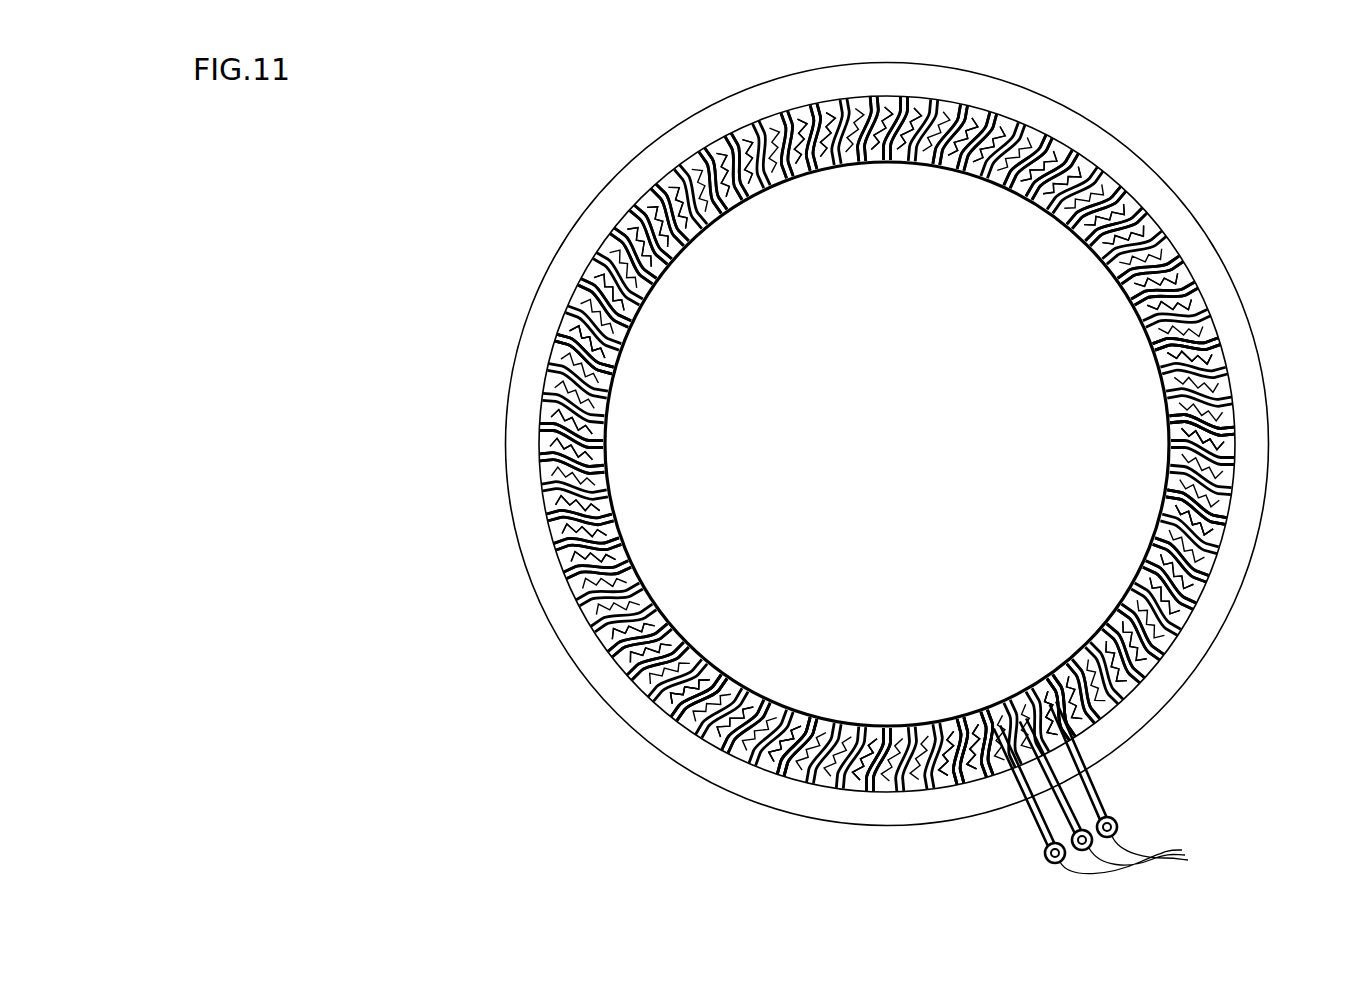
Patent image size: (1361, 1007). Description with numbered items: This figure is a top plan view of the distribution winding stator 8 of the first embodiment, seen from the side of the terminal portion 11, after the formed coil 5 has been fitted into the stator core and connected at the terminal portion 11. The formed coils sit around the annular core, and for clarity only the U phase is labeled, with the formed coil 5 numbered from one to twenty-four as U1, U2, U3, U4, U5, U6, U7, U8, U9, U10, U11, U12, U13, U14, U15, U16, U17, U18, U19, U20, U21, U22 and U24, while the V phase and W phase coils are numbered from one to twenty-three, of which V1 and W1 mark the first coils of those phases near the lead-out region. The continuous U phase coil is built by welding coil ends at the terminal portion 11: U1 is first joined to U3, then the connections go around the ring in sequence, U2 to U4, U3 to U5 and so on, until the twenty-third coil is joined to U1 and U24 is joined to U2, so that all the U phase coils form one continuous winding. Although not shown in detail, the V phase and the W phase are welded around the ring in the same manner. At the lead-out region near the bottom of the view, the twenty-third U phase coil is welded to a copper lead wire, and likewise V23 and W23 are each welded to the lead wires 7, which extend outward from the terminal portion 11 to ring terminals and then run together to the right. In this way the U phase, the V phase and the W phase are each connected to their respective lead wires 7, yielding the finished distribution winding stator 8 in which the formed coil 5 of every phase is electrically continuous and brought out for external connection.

The U phase formed coil number one U1 is at (865, 797).
The U phase formed coil number two U2 is at (795, 770).
The U phase formed coil number three U3 is at (723, 750).
The U phase formed coil number four U4 is at (660, 713).
The U phase formed coil number five U5 is at (607, 643).
The U phase formed coil number six U6 is at (557, 540).
The U phase formed coil number seven U7 is at (545, 442).
The U phase formed coil number eight U8 is at (553, 350).
The U phase formed coil number nine U9 is at (580, 272).
The U phase formed coil number ten U10 is at (640, 200).
The U phase formed coil number eleven U11 is at (710, 140).
The U phase formed coil number twelve U12 is at (787, 112).
The U phase formed coil number thirteen U13 is at (882, 97).
The U phase formed coil number fourteen U14 is at (973, 103).
The U phase formed coil number fifteen U15 is at (1052, 128).
The U phase formed coil number sixteen U16 is at (1122, 182).
The U phase formed coil number seventeen U17 is at (1177, 247).
The U phase formed coil number eighteen U18 is at (1210, 330).
The U phase formed coil number nineteen U19 is at (1227, 430).
The U phase formed coil number twenty U20 is at (1220, 513).
The U phase formed coil number twenty-one U21 is at (1217, 592).
The U phase formed coil number twenty-two U22 is at (1183, 675).
The U phase formed coil number twenty-four U24 is at (973, 773).
The V phase formed coil number one V1 is at (990, 697).
The W phase formed coil number one W1 is at (963, 700).
The V phase formed coil number twenty-three V23 is at (1080, 757).
The W phase formed coil number twenty-three W23 is at (1087, 773).
The formed coil 5 is at (1077, 647).
The lead wires 7 is at (1133, 859).
The distribution winding stator 8 is at (1266, 115).
The terminal portion 11 is at (935, 780).